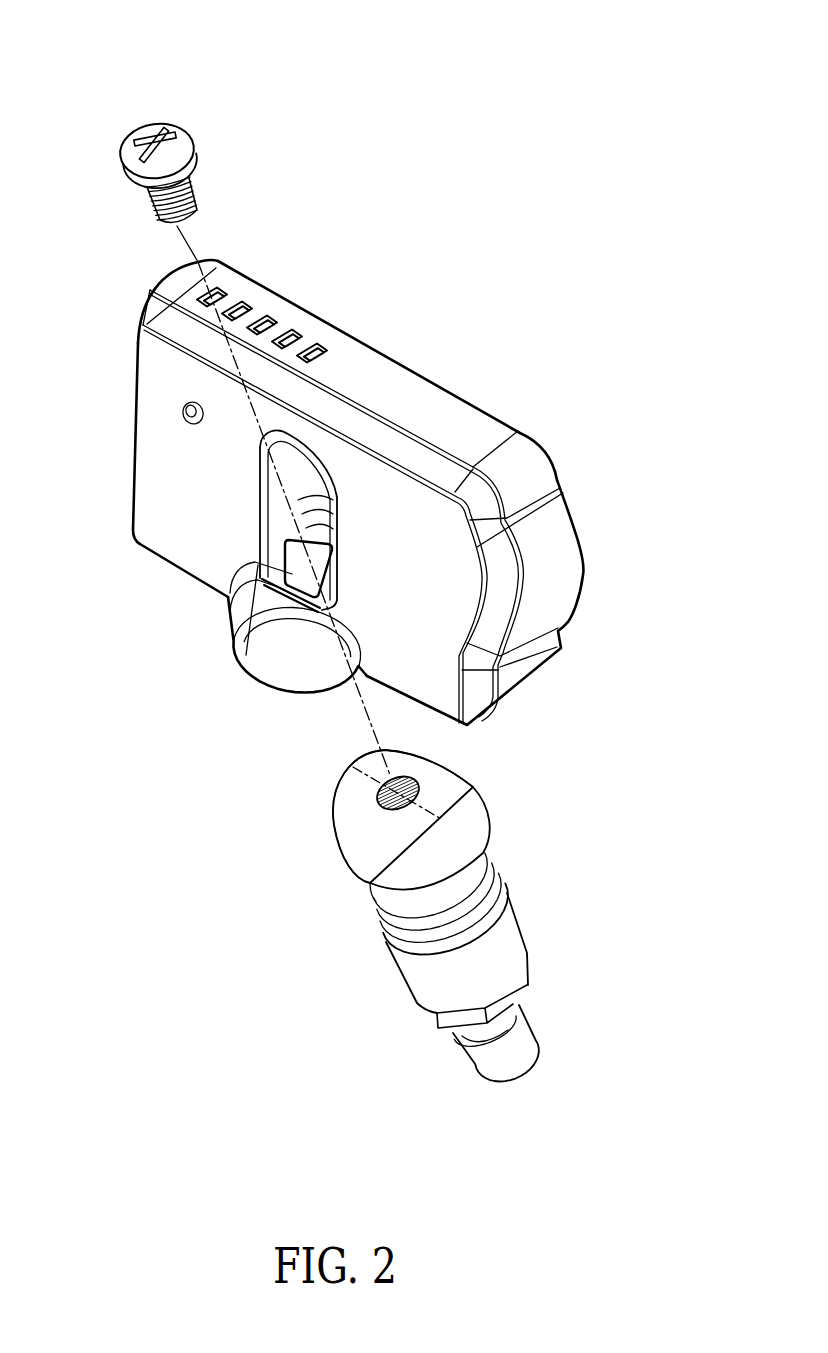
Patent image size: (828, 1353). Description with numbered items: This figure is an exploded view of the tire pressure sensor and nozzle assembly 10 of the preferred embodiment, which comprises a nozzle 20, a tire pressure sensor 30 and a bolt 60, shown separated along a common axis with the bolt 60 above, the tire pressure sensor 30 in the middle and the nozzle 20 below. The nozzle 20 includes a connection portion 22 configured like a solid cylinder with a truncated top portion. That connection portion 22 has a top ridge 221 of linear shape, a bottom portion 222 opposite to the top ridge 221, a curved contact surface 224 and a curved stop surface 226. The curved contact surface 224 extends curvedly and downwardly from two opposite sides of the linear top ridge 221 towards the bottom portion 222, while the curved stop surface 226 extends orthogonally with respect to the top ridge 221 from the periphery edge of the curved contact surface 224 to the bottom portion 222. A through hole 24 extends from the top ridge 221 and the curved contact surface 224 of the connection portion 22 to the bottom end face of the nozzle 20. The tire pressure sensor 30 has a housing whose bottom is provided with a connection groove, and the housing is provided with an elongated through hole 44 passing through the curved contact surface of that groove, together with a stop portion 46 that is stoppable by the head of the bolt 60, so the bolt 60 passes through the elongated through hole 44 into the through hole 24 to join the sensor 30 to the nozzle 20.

The tire pressure sensor and nozzle assembly 10 is at (455, 190).
The nozzle 20 is at (475, 967).
The connection portion 22 is at (412, 809).
The through hole 24 is at (415, 790).
The tire pressure sensor 30 is at (548, 452).
The elongated through hole 44 is at (305, 572).
The stop portion 46 is at (290, 560).
The bolt 60 is at (196, 137).
The top ridge 221 is at (353, 760).
The bottom portion 222 is at (386, 942).
The curved contact surface 224 is at (333, 810).
The curved stop surface 226 is at (470, 847).